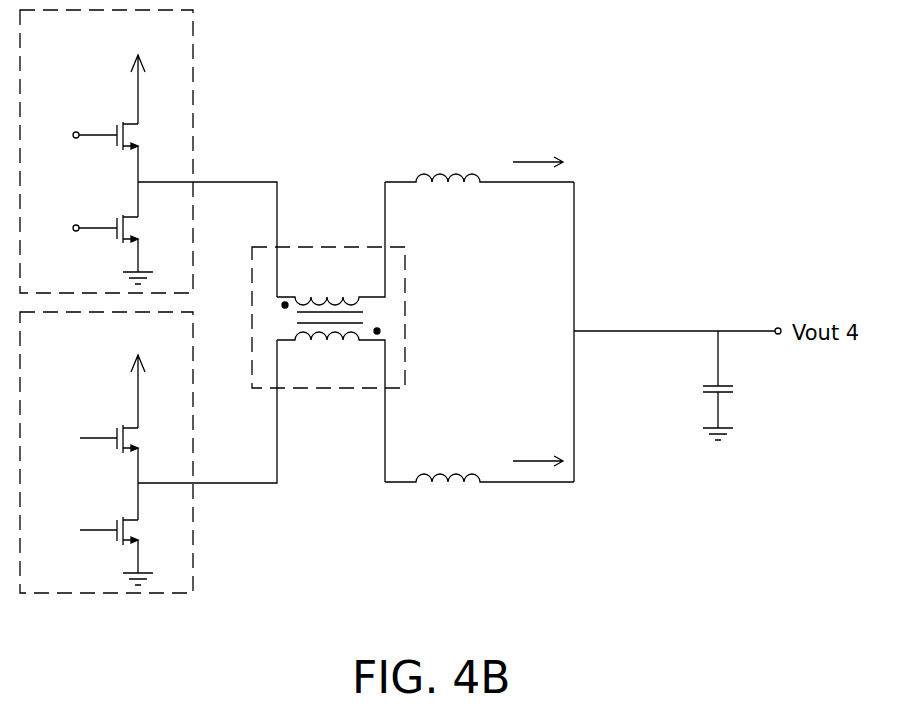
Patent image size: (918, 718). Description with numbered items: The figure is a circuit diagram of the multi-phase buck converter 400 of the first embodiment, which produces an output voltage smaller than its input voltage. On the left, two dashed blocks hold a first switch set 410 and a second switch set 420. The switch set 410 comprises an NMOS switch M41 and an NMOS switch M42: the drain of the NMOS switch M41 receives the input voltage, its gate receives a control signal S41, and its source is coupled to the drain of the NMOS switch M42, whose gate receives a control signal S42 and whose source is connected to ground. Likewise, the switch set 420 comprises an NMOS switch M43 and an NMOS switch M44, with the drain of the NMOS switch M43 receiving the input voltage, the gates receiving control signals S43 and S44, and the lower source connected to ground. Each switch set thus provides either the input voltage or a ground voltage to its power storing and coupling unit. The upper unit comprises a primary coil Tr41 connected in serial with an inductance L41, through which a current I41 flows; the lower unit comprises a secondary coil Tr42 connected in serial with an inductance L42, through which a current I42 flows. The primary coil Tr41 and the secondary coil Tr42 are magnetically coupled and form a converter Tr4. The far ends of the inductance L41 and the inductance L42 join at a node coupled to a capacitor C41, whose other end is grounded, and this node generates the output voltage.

The switch set 410 is at (193, 66).
The switch set 420 is at (193, 533).
The multi-phase buck converter 400 is at (403, 597).
The converter Tr4 is at (405, 278).
The primary coil Tr41 is at (331, 245).
The secondary coil Tr42 is at (331, 405).
The inductance L41 is at (480, 164).
The inductance L42 is at (480, 466).
The current I41 is at (538, 152).
The current I42 is at (538, 452).
The capacitor C41 is at (743, 385).
The NMOS switch M41 is at (152, 136).
The NMOS switch M42 is at (152, 229).
The NMOS switch M43 is at (152, 439).
The NMOS switch M44 is at (152, 531).
The control signal S41 is at (73, 138).
The control signal S42 is at (73, 229).
The control signal S43 is at (73, 439).
The control signal S44 is at (73, 531).